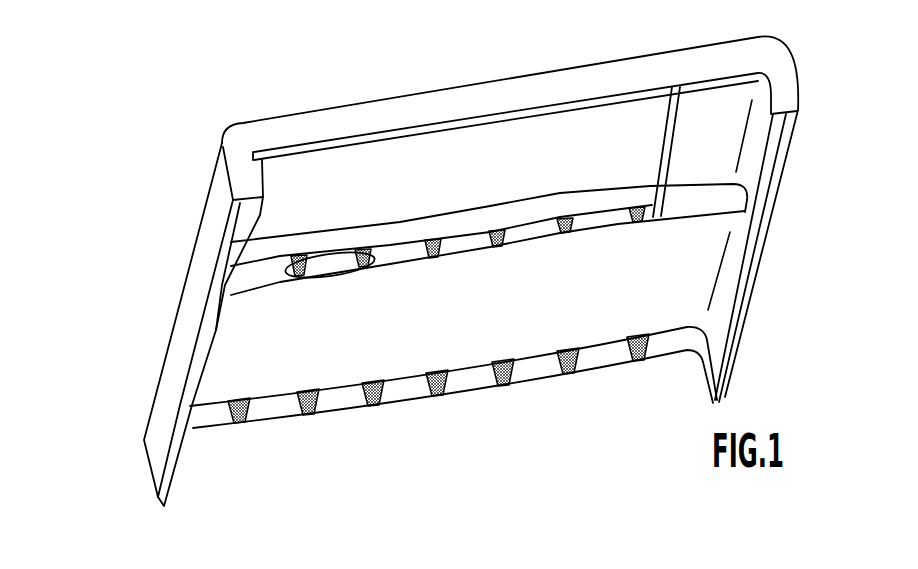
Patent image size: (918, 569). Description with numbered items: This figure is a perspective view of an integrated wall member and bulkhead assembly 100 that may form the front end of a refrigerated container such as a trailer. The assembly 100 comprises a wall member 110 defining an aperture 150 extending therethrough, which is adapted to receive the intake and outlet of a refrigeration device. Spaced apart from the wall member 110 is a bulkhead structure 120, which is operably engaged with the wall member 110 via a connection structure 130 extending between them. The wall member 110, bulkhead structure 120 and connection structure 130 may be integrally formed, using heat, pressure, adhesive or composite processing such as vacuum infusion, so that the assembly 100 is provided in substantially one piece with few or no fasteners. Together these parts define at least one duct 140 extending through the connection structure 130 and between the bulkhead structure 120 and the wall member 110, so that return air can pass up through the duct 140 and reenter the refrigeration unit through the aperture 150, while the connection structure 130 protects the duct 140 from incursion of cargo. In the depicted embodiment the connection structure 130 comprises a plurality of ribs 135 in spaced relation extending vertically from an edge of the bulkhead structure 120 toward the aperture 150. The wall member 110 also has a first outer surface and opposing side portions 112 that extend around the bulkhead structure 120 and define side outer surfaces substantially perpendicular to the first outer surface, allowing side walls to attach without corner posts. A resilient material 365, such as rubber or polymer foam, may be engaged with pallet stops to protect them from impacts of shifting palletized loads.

The integrated wall member and bulkhead assembly 100 is at (187, 102).
The wall member 110 is at (280, 140).
The opposing side portions 112 is at (762, 254).
The bulkhead structure 120 is at (597, 327).
The connection structure 130 is at (232, 246).
The ribs 135 is at (555, 232).
The duct 140 is at (473, 242).
The aperture 150 is at (623, 135).
The resilient material 365 is at (240, 423).